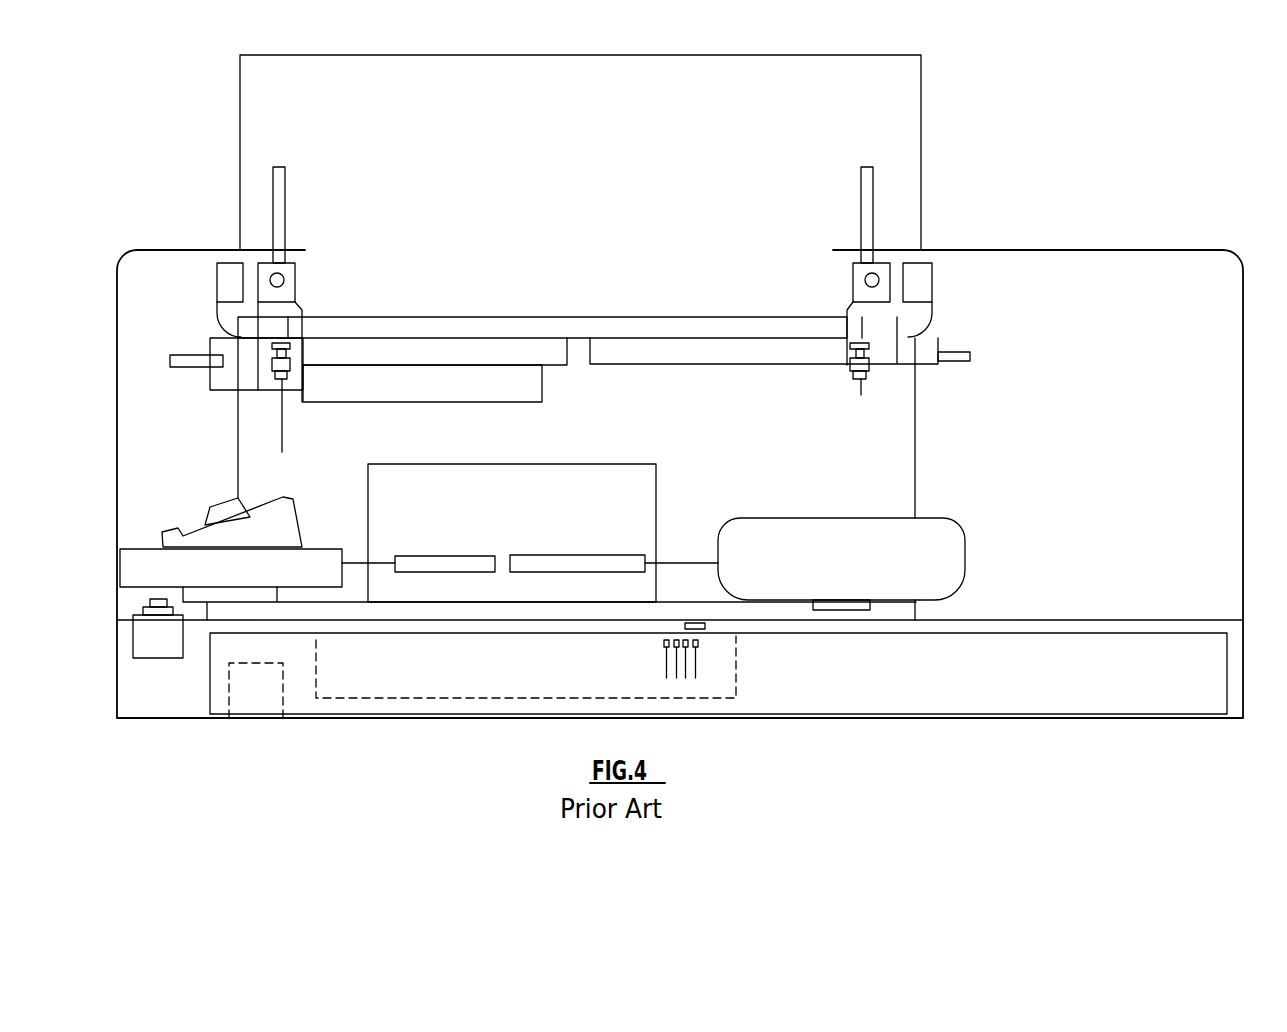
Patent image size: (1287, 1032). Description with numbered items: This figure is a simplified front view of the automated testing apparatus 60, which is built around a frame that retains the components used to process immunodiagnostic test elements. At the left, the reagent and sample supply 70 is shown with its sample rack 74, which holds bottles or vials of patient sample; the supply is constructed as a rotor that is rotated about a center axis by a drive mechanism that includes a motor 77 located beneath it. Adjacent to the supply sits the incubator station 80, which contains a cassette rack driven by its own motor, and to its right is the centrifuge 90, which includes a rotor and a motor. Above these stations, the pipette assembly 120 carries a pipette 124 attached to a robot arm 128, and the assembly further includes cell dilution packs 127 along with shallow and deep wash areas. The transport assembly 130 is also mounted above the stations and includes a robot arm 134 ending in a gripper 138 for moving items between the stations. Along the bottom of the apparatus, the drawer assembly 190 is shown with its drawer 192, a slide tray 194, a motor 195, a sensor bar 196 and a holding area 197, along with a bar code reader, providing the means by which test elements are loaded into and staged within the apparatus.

The testing apparatus 60 is at (1070, 177).
The reagent and sample supply 70 is at (307, 486).
The sample rack 74 is at (314, 547).
The motor 77 is at (129, 606).
The incubator station 80 is at (571, 448).
The centrifuge 90 is at (951, 500).
The pipette assembly 120 is at (309, 210).
The pipette 124 is at (282, 438).
The cell dilution packs 127 is at (437, 552).
The robot arm 128 is at (321, 276).
The transport assembly 130 is at (839, 208).
The robot arm 134 is at (828, 274).
The gripper 138 is at (855, 383).
The drawer assembly 190 is at (1068, 730).
The drawer 192 is at (963, 717).
The slide tray 194 is at (412, 698).
The motor 195 is at (255, 702).
The sensor bar 196 is at (705, 626).
The holding area 197 is at (565, 553).